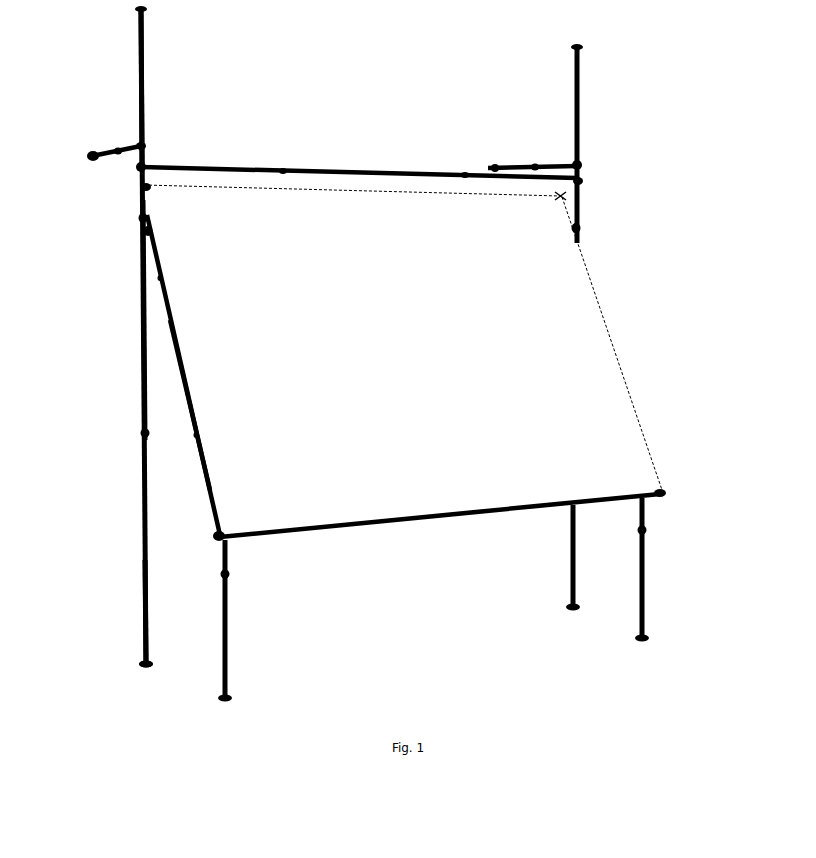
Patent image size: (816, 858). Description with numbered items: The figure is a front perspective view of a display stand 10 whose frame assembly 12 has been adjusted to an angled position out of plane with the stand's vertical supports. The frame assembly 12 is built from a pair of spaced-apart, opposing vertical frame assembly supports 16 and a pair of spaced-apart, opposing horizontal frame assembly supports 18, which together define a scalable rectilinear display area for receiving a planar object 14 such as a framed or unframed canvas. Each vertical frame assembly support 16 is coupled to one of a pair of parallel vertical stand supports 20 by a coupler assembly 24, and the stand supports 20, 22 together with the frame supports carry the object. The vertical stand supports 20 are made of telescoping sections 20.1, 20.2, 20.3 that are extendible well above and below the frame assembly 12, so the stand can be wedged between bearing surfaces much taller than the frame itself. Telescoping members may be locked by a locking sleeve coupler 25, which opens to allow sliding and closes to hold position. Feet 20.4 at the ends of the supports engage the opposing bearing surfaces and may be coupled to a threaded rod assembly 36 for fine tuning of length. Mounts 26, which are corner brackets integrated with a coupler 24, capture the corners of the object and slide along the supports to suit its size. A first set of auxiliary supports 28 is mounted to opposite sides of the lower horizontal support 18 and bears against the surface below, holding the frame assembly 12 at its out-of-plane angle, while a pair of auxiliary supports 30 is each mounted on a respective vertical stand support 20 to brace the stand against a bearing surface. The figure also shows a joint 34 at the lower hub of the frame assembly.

The display stand 10 is at (327, 100).
The frame assembly 12 is at (182, 378).
The planar object 14 is at (583, 307).
The vertical frame assembly support 16 is at (197, 455).
The horizontal frame assembly support 18 is at (330, 187).
The vertical stand support 20 is at (580, 92).
The vertical stand support section 20.1 is at (144, 637).
The vertical stand support section 20.2 is at (143, 343).
The vertical stand support section 20.3 is at (140, 43).
The stand vertical support foot 20.4 is at (147, 668).
The stand support 22 is at (237, 166).
The coupler assembly 24 is at (582, 235).
The locking sleeve coupler 25 is at (144, 436).
The mount 26 is at (579, 181).
The auxiliary support 28 is at (232, 656).
The auxiliary support 30 is at (118, 149).
The pivot joint 34 is at (141, 234).
The threaded rod assembly 36 is at (148, 187).